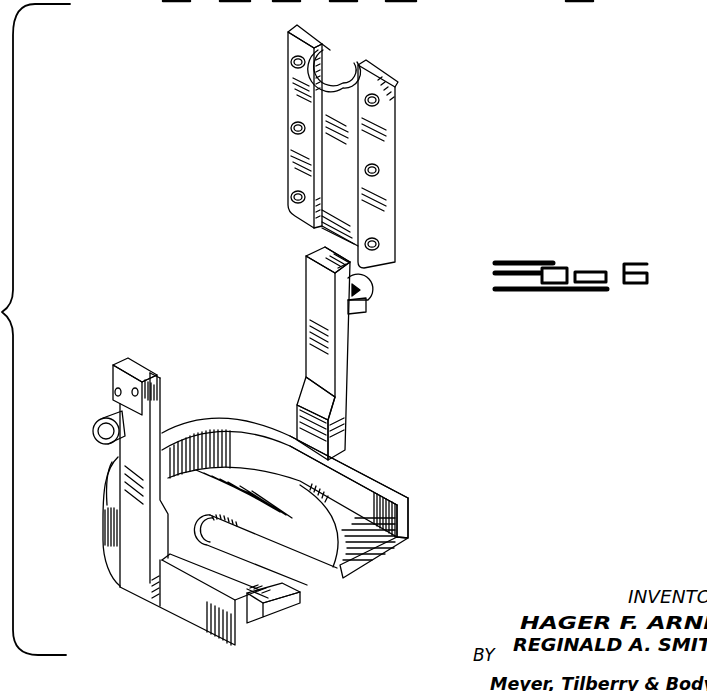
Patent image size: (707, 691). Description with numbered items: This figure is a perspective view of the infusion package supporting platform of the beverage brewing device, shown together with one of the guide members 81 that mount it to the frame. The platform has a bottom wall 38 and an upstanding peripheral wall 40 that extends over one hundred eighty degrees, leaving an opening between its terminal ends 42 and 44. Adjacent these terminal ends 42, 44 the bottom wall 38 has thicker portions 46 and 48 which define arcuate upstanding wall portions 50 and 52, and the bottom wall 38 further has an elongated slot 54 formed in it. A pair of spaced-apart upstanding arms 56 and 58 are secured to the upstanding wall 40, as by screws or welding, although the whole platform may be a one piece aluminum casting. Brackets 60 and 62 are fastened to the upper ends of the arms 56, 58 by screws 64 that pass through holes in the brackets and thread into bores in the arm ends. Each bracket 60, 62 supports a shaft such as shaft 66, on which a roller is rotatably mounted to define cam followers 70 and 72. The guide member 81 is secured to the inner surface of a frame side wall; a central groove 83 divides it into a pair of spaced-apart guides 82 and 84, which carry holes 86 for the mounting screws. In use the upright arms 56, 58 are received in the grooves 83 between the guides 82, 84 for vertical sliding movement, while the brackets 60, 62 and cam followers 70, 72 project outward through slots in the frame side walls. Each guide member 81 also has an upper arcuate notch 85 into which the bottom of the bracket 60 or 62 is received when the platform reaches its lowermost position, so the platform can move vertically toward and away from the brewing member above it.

The bottom wall 38 is at (237, 494).
The upstanding peripheral wall 40 is at (267, 442).
The terminal end 42 is at (238, 632).
The terminal end 44 is at (403, 521).
The thicker portion 46 is at (266, 603).
The thicker portion 48 is at (383, 540).
The arcuate upstanding wall portion 50 is at (263, 587).
The arcuate upstanding wall portion 52 is at (322, 492).
The elongated slot 54 is at (320, 580).
The upstanding arm 56 is at (120, 467).
The upstanding arm 58 is at (342, 352).
The bracket 60 is at (118, 363).
The bracket 62 is at (318, 249).
The screws 64 is at (115, 391).
The shaft 66 is at (100, 437).
The cam follower 70 is at (85, 427).
The cam follower 72 is at (367, 302).
The guide member 81 is at (328, 144).
The guide 82 is at (318, 46).
The central groove 83 is at (332, 153).
The guide 84 is at (395, 84).
The upper arcuate notch 85 is at (343, 78).
The holes 86 is at (282, 105).